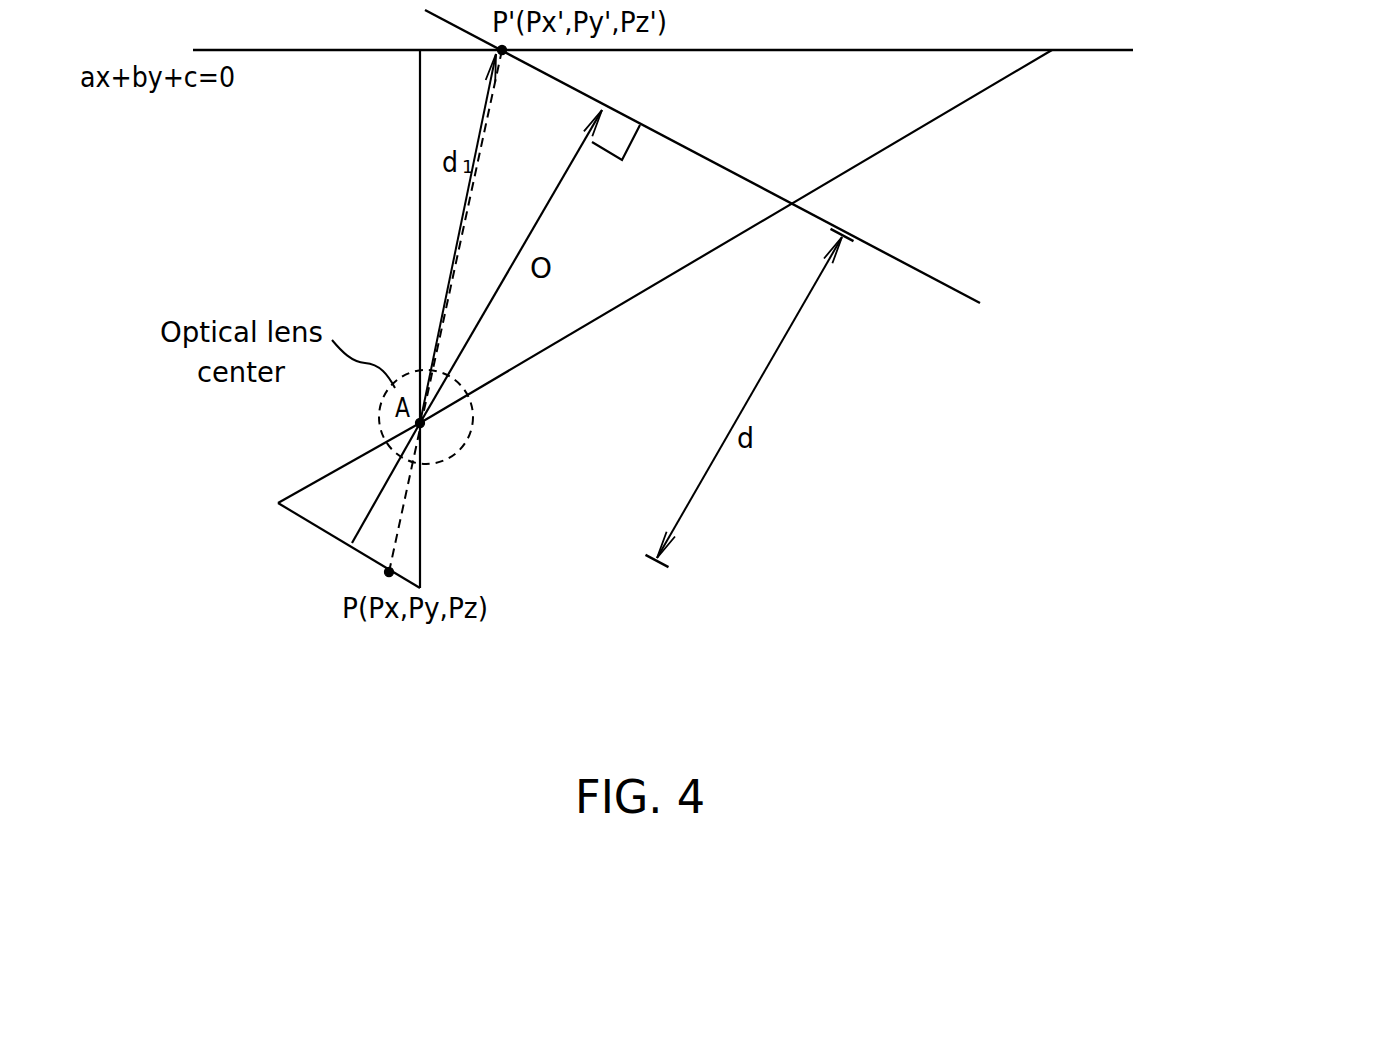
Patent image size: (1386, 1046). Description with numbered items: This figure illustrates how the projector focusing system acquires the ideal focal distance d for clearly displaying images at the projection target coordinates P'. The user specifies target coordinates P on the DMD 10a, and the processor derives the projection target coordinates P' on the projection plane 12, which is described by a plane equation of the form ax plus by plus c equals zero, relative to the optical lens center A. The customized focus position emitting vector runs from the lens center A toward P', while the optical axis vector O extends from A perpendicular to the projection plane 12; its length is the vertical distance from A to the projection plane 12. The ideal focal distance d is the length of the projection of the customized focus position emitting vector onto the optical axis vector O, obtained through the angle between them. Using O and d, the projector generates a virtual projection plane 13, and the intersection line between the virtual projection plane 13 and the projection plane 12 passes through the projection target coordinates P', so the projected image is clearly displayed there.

The projection plane 12 is at (1197, 113).
The virtual projection plane 13 is at (980, 303).
The DMD 10a is at (303, 523).